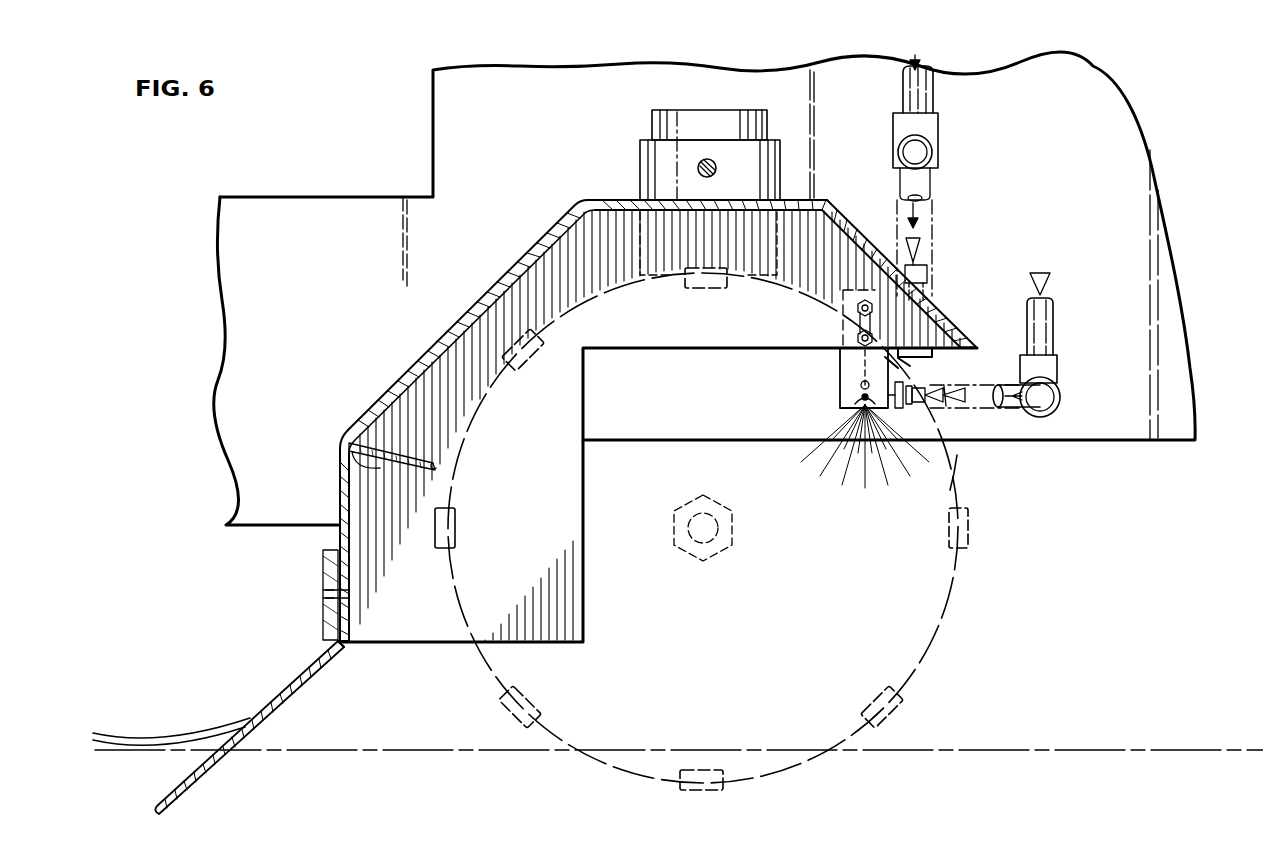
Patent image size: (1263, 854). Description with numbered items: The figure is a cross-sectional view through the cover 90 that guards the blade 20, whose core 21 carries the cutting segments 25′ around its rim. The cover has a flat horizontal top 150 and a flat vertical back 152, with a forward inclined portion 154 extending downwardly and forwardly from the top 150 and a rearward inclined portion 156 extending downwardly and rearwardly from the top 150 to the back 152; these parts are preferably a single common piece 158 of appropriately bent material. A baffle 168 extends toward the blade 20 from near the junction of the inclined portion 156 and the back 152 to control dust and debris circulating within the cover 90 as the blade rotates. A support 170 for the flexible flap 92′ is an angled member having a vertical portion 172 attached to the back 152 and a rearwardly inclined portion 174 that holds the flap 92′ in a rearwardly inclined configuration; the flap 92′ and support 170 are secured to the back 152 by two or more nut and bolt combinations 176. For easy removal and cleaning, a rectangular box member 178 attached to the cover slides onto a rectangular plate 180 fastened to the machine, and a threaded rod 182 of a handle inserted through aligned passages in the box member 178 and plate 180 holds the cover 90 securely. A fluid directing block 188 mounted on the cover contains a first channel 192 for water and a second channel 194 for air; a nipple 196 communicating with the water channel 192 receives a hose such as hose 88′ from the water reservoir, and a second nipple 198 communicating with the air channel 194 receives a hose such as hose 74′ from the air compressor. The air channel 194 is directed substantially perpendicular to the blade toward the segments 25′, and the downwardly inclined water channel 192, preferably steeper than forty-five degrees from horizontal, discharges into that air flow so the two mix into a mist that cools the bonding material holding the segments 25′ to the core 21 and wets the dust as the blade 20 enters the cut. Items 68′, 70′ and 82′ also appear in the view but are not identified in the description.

The blade 20 is at (954, 611).
The core 21 is at (956, 462).
The cutting segments 25′ is at (457, 515).
The inlet pipe 68′ is at (1054, 313).
The elbow 70′ is at (1060, 399).
The hose 74′ is at (1012, 409).
The inlet conduit 82′ is at (936, 92).
The hose 88′ is at (938, 180).
The cover 90 is at (543, 230).
The flap 92′ is at (268, 690).
The top 150 is at (607, 200).
The back 152 is at (357, 565).
The inclined portion 154 is at (938, 320).
The inclined portion 156 is at (488, 302).
The common piece 158 is at (851, 216).
The baffle 168 is at (348, 462).
The support 170 is at (344, 655).
The vertical portion 172 is at (346, 626).
The rearwardly inclined portion 174 is at (292, 692).
The nut and bolt combinations 176 is at (342, 596).
The box member 178 is at (770, 155).
The plate 180 is at (727, 110).
The threaded rod 182 is at (700, 163).
The fluid directing block 188 is at (832, 393).
The first channel 192 is at (860, 386).
The second channel 194 is at (886, 409).
The nipple 196 is at (926, 277).
The second nipple 198 is at (935, 397).